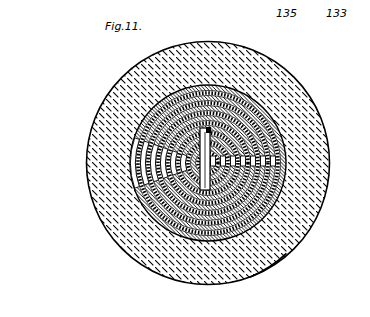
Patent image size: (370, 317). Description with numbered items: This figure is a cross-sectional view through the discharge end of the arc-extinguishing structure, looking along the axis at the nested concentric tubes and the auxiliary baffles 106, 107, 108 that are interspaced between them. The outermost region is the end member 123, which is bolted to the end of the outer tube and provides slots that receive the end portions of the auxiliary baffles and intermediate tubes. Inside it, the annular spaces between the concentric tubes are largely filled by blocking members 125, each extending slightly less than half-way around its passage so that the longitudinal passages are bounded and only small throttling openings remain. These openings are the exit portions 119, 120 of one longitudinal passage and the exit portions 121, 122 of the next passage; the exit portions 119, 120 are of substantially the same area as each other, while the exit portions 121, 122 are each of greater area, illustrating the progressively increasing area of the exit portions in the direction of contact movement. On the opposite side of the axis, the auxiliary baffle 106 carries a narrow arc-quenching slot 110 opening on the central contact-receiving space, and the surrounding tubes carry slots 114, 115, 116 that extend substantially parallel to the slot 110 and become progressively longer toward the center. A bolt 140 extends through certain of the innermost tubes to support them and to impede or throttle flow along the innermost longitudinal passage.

The auxiliary baffle 106 is at (270, 138).
The auxiliary baffle 107 is at (258, 108).
The auxiliary baffle 108 is at (246, 95).
The slot 110 is at (300, 176).
The slot 114 is at (310, 198).
The slot 115 is at (280, 246).
The slot 116 is at (254, 262).
The exit portion 119 is at (268, 152).
The exit portion 120 is at (263, 122).
The exit portion 121 is at (285, 195).
The exit portion 122 is at (288, 212).
The end member 123 is at (101, 200).
The blocking member 125 is at (143, 101).
The bolt 140 is at (158, 220).